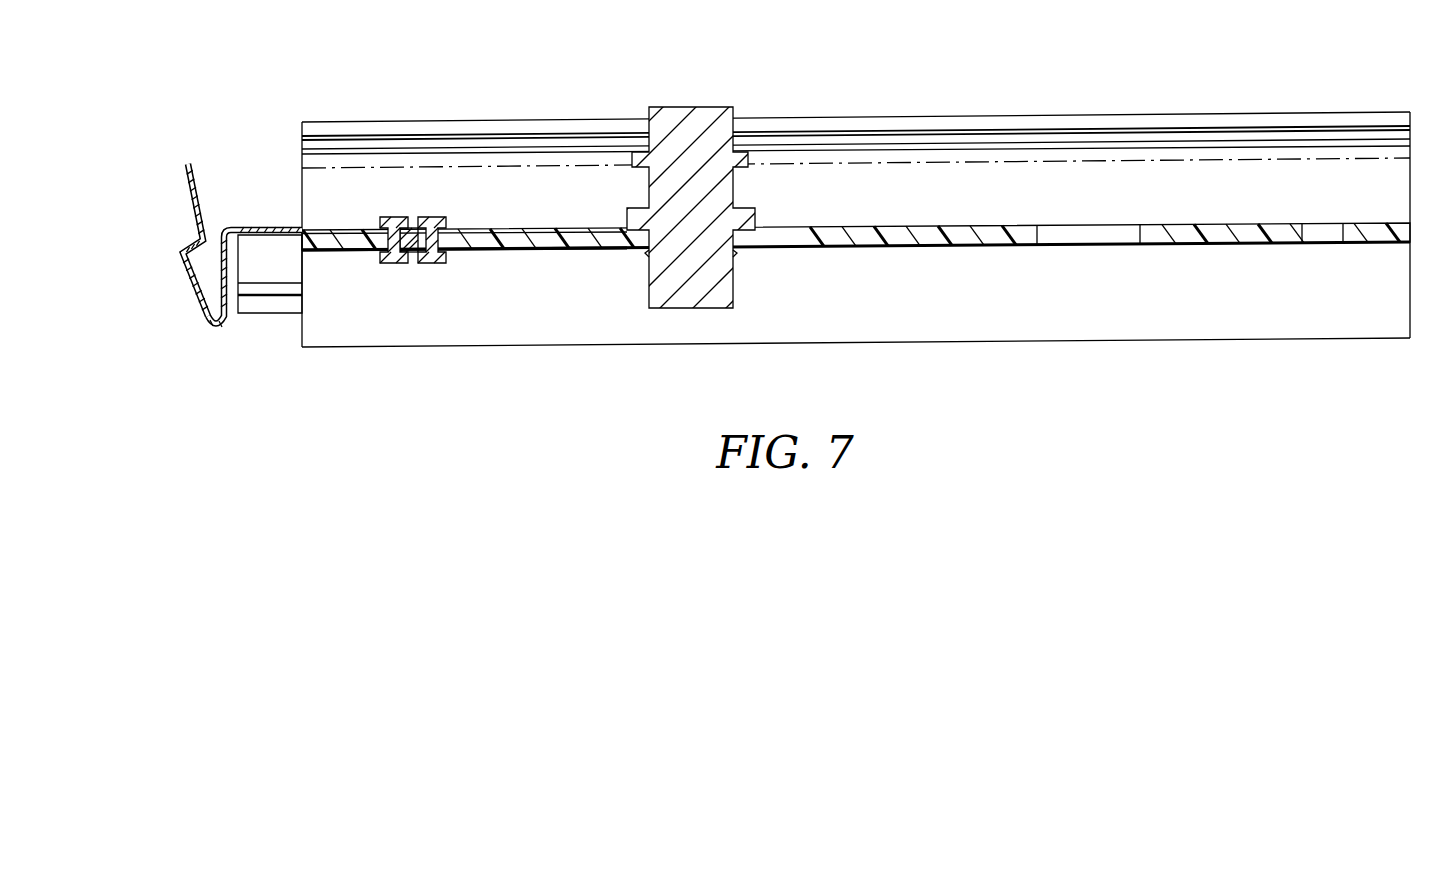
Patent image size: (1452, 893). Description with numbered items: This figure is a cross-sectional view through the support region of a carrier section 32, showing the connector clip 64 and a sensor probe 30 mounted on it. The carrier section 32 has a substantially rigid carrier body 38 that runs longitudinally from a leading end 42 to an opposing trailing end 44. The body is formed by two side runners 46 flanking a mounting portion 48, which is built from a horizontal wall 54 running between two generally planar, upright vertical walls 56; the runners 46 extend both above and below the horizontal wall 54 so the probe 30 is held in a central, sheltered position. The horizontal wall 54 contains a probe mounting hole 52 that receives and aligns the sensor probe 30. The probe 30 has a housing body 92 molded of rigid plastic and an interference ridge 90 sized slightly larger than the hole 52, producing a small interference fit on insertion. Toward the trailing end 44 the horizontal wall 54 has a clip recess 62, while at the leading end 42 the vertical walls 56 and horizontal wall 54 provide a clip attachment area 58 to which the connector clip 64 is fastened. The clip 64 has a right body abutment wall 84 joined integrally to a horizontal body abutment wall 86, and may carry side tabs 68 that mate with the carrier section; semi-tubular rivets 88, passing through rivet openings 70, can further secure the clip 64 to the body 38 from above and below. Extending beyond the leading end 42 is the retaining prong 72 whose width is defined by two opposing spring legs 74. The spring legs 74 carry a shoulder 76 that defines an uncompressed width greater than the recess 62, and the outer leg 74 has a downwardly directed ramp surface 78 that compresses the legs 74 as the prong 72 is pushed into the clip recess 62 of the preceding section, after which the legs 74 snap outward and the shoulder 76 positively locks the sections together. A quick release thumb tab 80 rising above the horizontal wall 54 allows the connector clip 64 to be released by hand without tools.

The sensor probe 30 is at (677, 107).
The carrier section 32 is at (1210, 100).
The carrier body 38 is at (1110, 117).
The leading end 42 is at (302, 152).
The trailing end 44 is at (1412, 140).
The runner 46 is at (952, 114).
The mounting portion 48 is at (880, 260).
The probe mounting hole 52 is at (1090, 237).
The horizontal wall 54 is at (943, 241).
The vertical wall 56 is at (487, 302).
The clip attachment area 58 is at (356, 254).
The clip recess 62 is at (1322, 236).
The connector clip 64 is at (242, 212).
The side tab 68 is at (258, 290).
The rivet opening 70 is at (453, 232).
The prong 72 is at (203, 341).
The spring leg 74 is at (192, 306).
The shoulder 76 is at (190, 238).
The ramp surface 78 is at (186, 284).
The thumb tab 80 is at (200, 180).
The right body abutment wall 84 is at (280, 307).
The horizontal body abutment wall 86 is at (278, 226).
The semi-tubular rivet 88 is at (428, 215).
The interference ridge 90 is at (648, 253).
The housing body 92 is at (700, 140).